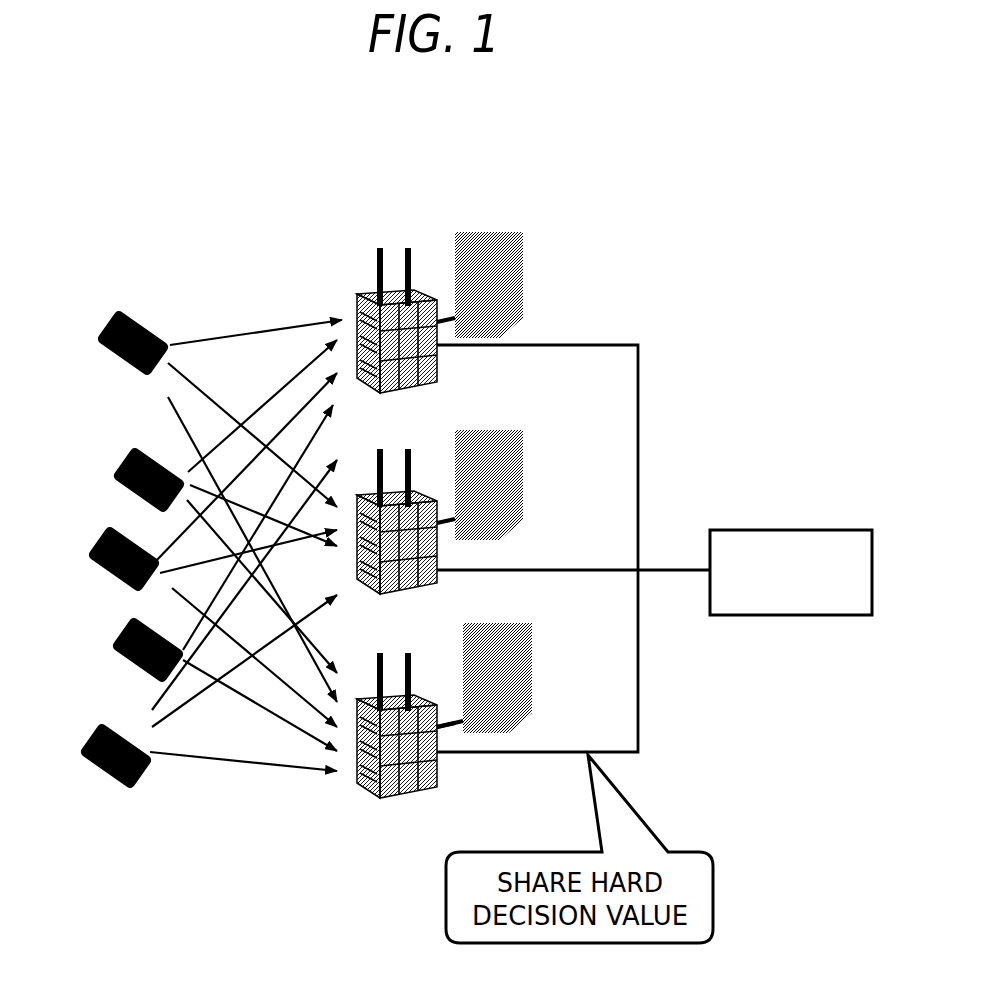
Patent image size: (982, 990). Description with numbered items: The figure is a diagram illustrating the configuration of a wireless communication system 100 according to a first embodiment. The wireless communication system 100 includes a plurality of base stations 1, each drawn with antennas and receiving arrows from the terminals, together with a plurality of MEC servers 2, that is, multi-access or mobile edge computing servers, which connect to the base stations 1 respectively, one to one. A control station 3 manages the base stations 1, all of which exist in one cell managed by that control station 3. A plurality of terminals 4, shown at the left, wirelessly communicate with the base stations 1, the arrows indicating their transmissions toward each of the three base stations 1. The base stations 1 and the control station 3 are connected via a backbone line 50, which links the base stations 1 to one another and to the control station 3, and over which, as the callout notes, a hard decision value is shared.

The base station 1 is at (395, 395).
The MEC server 2 is at (523, 275).
The control station 3 is at (800, 530).
The terminal 4 is at (135, 312).
The backbone line 50 is at (642, 405).
The wireless communication system 100 is at (637, 153).